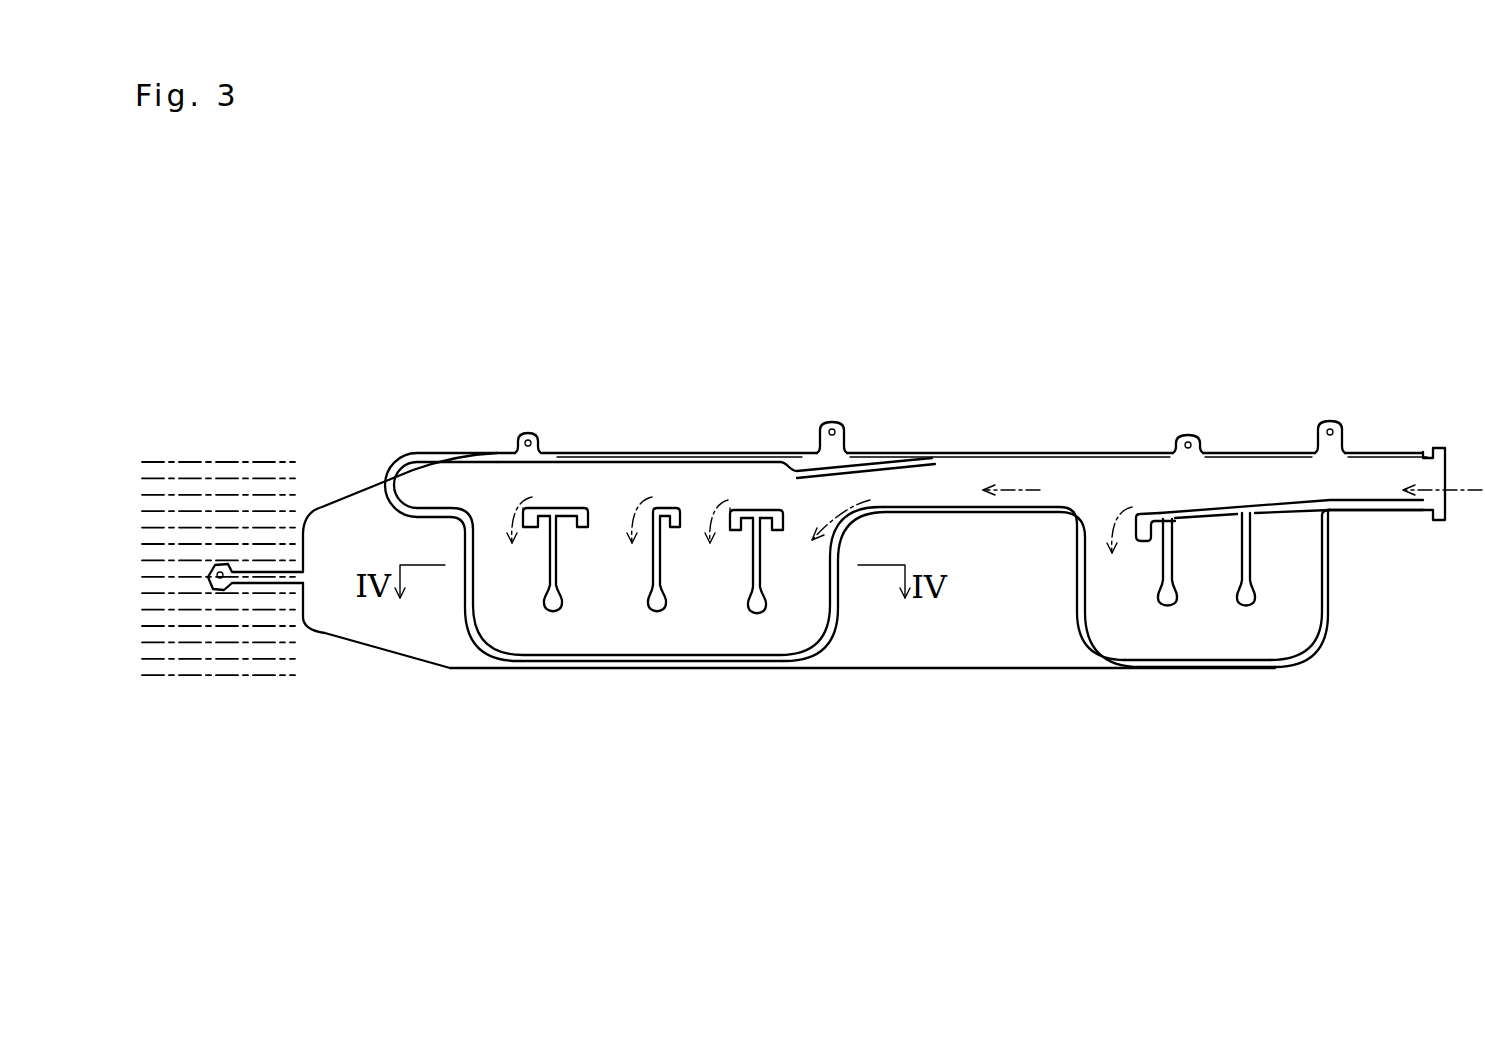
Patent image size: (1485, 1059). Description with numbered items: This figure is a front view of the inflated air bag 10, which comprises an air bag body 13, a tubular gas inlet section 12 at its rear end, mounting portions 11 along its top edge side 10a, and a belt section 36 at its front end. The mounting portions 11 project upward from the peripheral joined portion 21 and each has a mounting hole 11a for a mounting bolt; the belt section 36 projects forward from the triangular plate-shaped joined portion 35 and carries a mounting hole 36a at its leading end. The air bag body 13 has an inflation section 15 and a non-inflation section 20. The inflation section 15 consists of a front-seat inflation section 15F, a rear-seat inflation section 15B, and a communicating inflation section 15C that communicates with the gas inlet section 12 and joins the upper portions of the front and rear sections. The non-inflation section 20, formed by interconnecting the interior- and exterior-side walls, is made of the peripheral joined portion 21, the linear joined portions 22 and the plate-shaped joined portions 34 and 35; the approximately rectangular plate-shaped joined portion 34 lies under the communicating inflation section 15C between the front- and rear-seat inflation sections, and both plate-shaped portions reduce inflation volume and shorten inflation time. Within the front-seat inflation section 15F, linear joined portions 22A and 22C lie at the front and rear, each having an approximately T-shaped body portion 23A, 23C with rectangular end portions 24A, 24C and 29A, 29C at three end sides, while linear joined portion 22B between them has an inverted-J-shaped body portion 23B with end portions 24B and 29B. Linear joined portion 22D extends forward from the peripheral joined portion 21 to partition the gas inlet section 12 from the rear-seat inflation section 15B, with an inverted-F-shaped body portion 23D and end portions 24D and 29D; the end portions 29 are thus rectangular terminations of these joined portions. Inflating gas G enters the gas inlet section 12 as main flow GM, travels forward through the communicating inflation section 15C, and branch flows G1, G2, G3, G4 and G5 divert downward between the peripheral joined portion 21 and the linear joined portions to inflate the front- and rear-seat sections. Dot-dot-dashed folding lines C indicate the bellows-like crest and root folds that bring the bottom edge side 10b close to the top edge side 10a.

The air bag 10 is at (813, 545).
The top edge side 10a is at (992, 361).
The bottom edge side 10b is at (862, 770).
The mounting portion 11 is at (923, 350).
The mounting hole 11a is at (919, 347).
The gas inlet section 12 is at (1419, 414).
The air bag body 13 is at (1352, 612).
The inflation section 15 is at (944, 617).
The rear-seat inflation section 15B is at (1200, 663).
The communicating inflation section 15C is at (1291, 425).
The front-seat inflation section 15F is at (651, 727).
The non-inflation section 20 is at (717, 561).
The peripheral joined portion 21 is at (716, 397).
The plate-shaped joined portion 34 is at (976, 629).
The plate-shaped joined portion 35 is at (416, 625).
The linear joined portion 22 is at (881, 679).
The linear joined portion 22A is at (483, 671).
The linear joined portion 22B is at (657, 673).
The linear joined portion 22C is at (796, 679).
The linear joined portion 22D is at (1213, 680).
The body portion 23A is at (505, 687).
The body portion 23B is at (627, 650).
The body portion 23C is at (752, 697).
The body portion 23D is at (1189, 651).
The end portion 24A is at (520, 661).
The end portion 24B is at (652, 694).
The end portion 24C is at (791, 675).
The end portion 24D is at (1213, 696).
The end portion 29 is at (781, 536).
The end portion 29A is at (572, 431).
The end portion 29B is at (694, 442).
The end portion 29C is at (748, 422).
The end portion 29D is at (1107, 648).
The belt section 36 is at (248, 695).
The mounting hole 36a is at (221, 699).
The folding lines C is at (218, 487).
The inflating gas G is at (1443, 474).
The branch flow G1 is at (541, 509).
The branch flow G2 is at (660, 509).
The branch flow G3 is at (738, 509).
The branch flow G4 is at (862, 506).
The branch flow G5 is at (1140, 516).
The main flow GM is at (1037, 489).